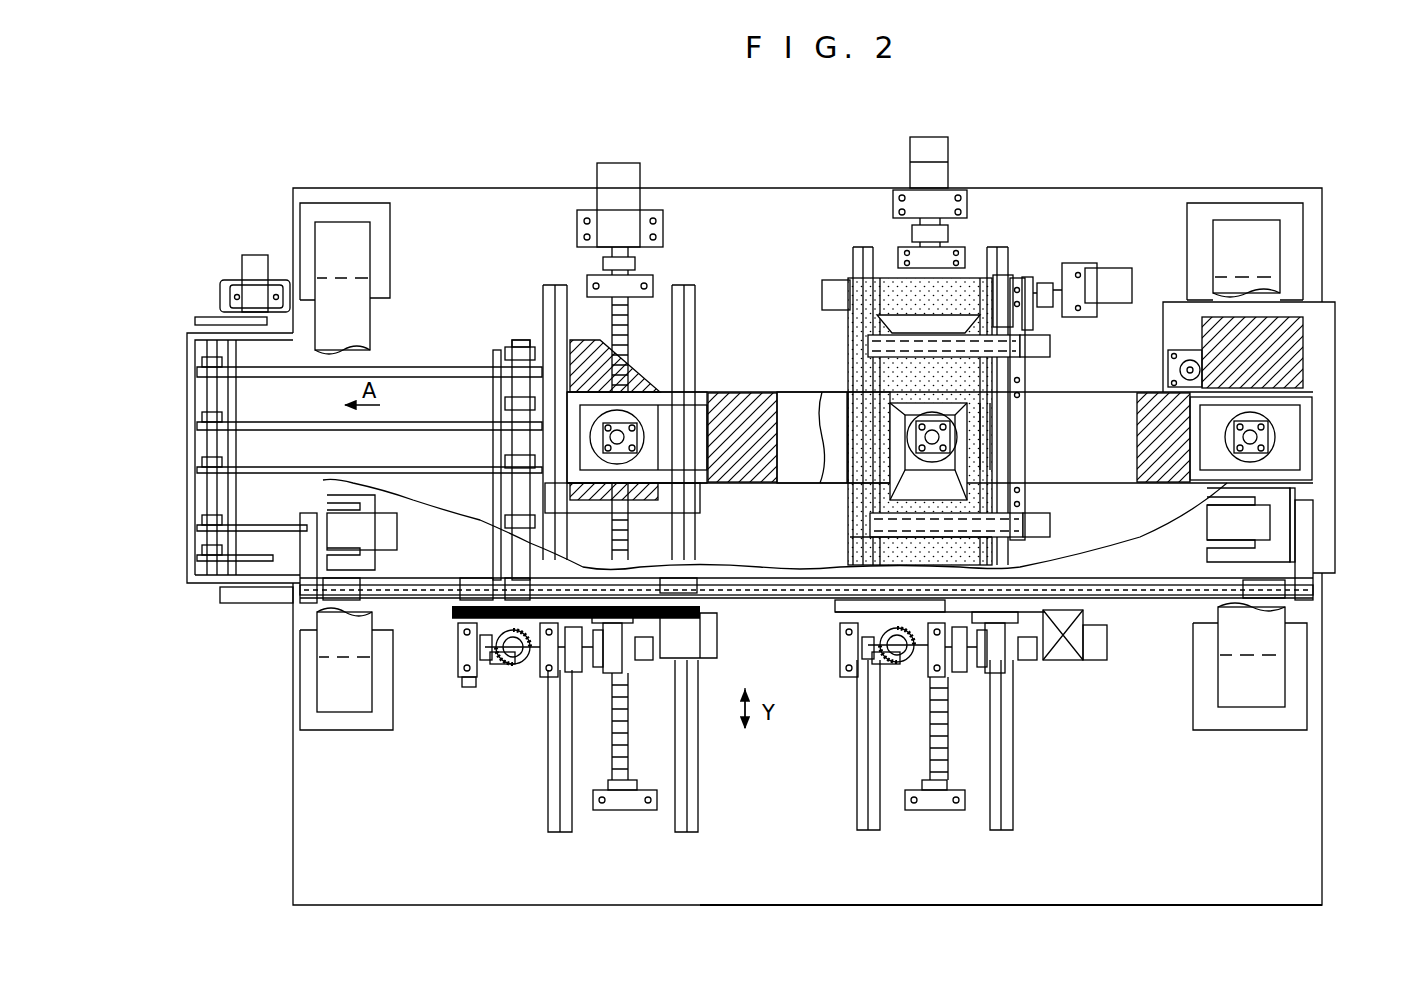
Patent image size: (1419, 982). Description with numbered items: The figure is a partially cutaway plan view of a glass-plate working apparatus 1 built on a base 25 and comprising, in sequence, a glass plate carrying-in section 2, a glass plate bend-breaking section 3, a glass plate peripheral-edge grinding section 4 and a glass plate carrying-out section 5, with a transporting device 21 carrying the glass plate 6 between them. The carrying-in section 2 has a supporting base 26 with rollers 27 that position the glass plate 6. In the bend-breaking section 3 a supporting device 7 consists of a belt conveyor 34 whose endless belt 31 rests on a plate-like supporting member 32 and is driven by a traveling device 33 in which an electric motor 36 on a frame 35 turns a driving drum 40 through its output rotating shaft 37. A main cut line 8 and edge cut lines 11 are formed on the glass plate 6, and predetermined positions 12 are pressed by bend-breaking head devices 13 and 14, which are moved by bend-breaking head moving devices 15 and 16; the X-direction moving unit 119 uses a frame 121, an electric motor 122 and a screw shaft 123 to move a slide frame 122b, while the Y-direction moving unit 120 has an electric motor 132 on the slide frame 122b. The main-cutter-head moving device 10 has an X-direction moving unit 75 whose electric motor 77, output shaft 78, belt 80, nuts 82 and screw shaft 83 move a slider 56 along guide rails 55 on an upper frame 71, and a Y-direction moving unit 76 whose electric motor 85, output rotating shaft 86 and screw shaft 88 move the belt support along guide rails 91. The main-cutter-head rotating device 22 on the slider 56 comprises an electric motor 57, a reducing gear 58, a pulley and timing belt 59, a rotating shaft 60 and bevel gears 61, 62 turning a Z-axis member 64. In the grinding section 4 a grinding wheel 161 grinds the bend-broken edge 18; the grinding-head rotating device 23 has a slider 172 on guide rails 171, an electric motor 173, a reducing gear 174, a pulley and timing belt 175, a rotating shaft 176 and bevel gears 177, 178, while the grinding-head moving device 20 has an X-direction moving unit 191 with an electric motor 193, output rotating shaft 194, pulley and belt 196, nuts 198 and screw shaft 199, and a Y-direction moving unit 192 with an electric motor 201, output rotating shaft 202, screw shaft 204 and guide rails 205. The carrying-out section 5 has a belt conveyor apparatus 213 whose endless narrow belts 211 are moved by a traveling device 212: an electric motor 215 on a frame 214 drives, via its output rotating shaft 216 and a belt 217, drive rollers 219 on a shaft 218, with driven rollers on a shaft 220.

The glass-plate working apparatus 1 is at (1213, 176).
The glass plate carrying-in section 2 is at (1333, 288).
The glass plate bend-breaking section 3 is at (830, 672).
The glass plate peripheral-edge grinding section 4 is at (506, 785).
The glass plate carrying-out section 5 is at (240, 625).
The glass plate 6 is at (583, 340).
The supporting device 7 is at (830, 312).
The main cut line 8 is at (850, 415).
The main-cutter-head moving device 10 is at (955, 148).
The edge cut line 11 is at (925, 350).
The predetermined position 12 is at (860, 375).
The bend-breaking head device 13 is at (1030, 378).
The bend-breaking head device 14 is at (1030, 498).
The bend-breaking head moving device 15 is at (1005, 347).
The bend-breaking head moving device 16 is at (1040, 520).
The bend-broken edge 18 is at (628, 380).
The grinding-head moving device 20 is at (660, 182).
The transporting device 21 is at (1320, 415).
The main-cutter-head rotating device 22 is at (1045, 690).
The grinding-head rotating device 23 is at (648, 672).
The base 25 is at (1322, 780).
The supporting base 26 is at (1328, 318).
The roller 27 is at (1180, 350).
The endless belt 31 is at (848, 290).
The plate-like supporting member 32 is at (850, 512).
The traveling device 33 is at (1088, 262).
The belt conveyor 34 is at (815, 298).
The frame 35 is at (1082, 268).
The electric motor 36 is at (1122, 285).
The output rotating shaft 37 is at (1045, 282).
The driving drum 40 is at (853, 268).
The guide rail 55 is at (1150, 585).
The slider 56 is at (1048, 665).
The electric motor 57 is at (1108, 655).
The reducing gear 58 is at (1005, 668).
The pulley and timing belt 59 is at (960, 672).
The rotating shaft 60 is at (915, 660).
The bevel gear 61 is at (858, 652).
The bevel gear 62 is at (875, 672).
The Z-axis member 64 is at (912, 678).
The upper frame 71 is at (1172, 588).
The X-direction moving unit 75 is at (1335, 525).
The Y-direction moving unit 76 is at (905, 180).
The electric motor 77 is at (1270, 512).
The output shaft 78 is at (1298, 525).
The belt 80 is at (1313, 592).
The nut 82 is at (870, 600).
The screw shaft 83 is at (1185, 625).
The electric motor 85 is at (940, 164).
The output rotating shaft 86 is at (912, 230).
The screw shaft 88 is at (940, 745).
The guide rail 91 is at (857, 737).
The X-direction moving unit 119 is at (1030, 372).
The Y-direction moving unit 120 is at (1022, 272).
The frame 121 is at (870, 345).
The electric motor 122 is at (1040, 348).
The slide frame 122b is at (998, 445).
The screw shaft 123 is at (900, 332).
The electric motor 132 is at (1005, 275).
The grinding wheel 161 is at (535, 722).
The guide rail 171 is at (448, 600).
The slider 172 is at (690, 605).
The electric motor 173 is at (718, 648).
The reducing gear 174 is at (610, 715).
The pulley and timing belt 175 is at (572, 672).
The rotating shaft 176 is at (520, 665).
The bevel gear 177 is at (462, 670).
The bevel gear 178 is at (490, 690).
The X-direction moving unit 191 is at (400, 525).
The Y-direction moving unit 192 is at (597, 185).
The electric motor 193 is at (365, 540).
The output rotating shaft 194 is at (320, 525).
The pulley and belt 196 is at (300, 603).
The nut 198 is at (517, 580).
The screw shaft 199 is at (403, 600).
The electric motor 201 is at (625, 200).
The output rotating shaft 202 is at (635, 258).
The screw shaft 204 is at (630, 740).
The guide rail 205 is at (698, 790).
The endless narrow belt 211 is at (446, 420).
The traveling device 212 is at (238, 248).
The belt conveyor apparatus 213 is at (208, 598).
The frame 214 is at (225, 292).
The electric motor 215 is at (255, 280).
The output rotating shaft 216 is at (245, 320).
The belt 217 is at (205, 318).
The shaft 218 is at (200, 450).
The drive roller 219 is at (210, 400).
The shaft 220 is at (495, 450).